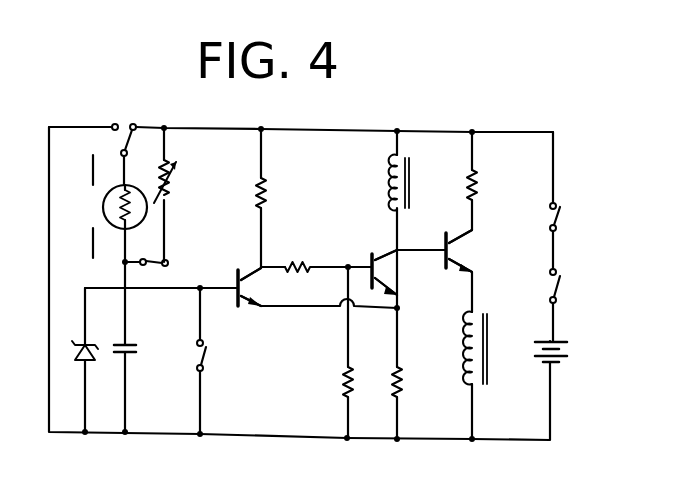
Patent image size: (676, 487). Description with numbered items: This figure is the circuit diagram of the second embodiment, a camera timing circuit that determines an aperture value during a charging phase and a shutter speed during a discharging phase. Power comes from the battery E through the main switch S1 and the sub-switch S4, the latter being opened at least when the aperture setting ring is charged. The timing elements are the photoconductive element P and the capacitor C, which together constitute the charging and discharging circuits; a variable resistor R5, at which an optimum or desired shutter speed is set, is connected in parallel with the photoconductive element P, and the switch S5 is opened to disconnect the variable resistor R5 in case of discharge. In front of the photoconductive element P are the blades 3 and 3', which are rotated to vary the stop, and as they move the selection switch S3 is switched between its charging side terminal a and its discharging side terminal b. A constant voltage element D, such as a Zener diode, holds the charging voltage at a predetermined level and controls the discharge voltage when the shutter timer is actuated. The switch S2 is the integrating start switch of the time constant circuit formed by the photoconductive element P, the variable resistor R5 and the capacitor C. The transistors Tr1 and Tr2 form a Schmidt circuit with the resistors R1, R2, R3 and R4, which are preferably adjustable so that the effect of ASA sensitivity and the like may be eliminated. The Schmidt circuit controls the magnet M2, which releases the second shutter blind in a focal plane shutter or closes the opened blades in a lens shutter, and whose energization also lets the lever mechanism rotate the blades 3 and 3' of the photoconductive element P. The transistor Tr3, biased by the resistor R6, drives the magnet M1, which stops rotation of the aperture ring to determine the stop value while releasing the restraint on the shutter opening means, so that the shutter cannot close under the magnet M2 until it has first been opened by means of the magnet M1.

The selection switch S3 is at (131, 125).
The discharging side terminal b is at (106, 112).
The charging side terminal a is at (154, 112).
The blade 3 is at (73, 166).
The blade 3' is at (73, 242).
The photoconductive element P is at (125, 220).
The variable resistor R5 is at (181, 184).
The switch S5 is at (167, 269).
The constant voltage element D is at (89, 367).
The capacitor C is at (135, 351).
The integrating start switch S2 is at (220, 355).
The resistor R4 is at (281, 194).
The resistor R3 is at (299, 253).
The transistor Tr1 is at (251, 301).
The transistor Tr2 is at (367, 259).
The transistor Tr3 is at (447, 264).
The magnet M2 is at (422, 171).
The magnet M1 is at (498, 349).
The resistor R6 is at (492, 184).
The resistor R2 is at (367, 386).
The resistor R1 is at (416, 386).
The main switch S1 is at (574, 222).
The sub-switch S4 is at (574, 289).
The battery E is at (560, 357).